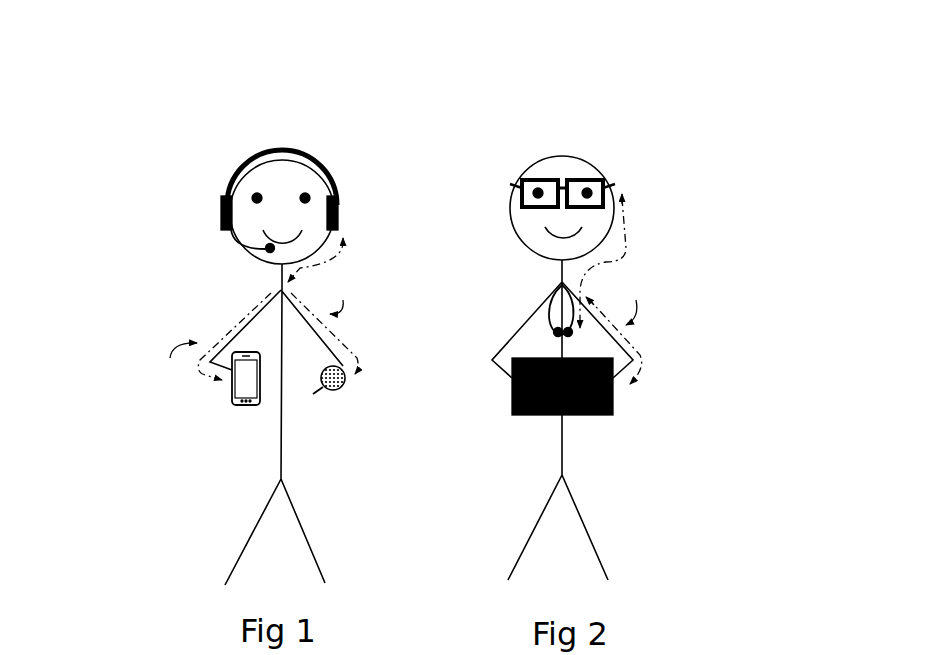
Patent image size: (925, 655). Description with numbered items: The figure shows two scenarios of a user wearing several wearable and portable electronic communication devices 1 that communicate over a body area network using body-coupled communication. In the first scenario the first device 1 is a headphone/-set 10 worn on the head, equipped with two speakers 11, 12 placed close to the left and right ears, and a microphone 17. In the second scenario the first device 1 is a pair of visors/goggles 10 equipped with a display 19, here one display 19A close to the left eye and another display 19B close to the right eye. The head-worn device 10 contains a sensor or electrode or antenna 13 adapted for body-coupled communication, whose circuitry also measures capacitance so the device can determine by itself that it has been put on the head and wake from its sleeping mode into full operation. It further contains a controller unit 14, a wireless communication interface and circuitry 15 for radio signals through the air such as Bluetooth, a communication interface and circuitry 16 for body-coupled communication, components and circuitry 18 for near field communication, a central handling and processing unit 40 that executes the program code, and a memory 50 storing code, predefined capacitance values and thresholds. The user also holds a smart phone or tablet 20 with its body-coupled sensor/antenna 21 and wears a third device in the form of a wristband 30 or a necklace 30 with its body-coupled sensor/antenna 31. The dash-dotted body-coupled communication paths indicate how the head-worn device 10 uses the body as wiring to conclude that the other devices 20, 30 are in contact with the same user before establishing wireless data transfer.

In FIG. 1, the wearable and portable electronic communication device 1 is at (222, 160).
In FIG. 2, the wearable and portable electronic communication device 1 is at (622, 305).
In FIG. 1, the headphone/-set or visors/goggles 10 is at (229, 183).
In FIG. 2, the headphone/-set or visors/goggles 10 is at (650, 119).
In FIG. 1, the speaker 11 is at (220, 214).
In FIG. 1, the speaker 12 is at (346, 214).
In FIG. 1, the sensor/electrode/antenna 13 is at (229, 183).
In FIG. 2, the sensor/electrode/antenna 13 is at (650, 119).
In FIG. 1, the controller unit 14 is at (229, 183).
In FIG. 2, the controller unit 14 is at (650, 119).
In FIG. 1, the wireless communication interface and circuitry 15 is at (229, 183).
In FIG. 2, the wireless communication interface and circuitry 15 is at (650, 119).
In FIG. 1, the communication interface and circuitry for BCC 16 is at (229, 183).
In FIG. 2, the communication interface and circuitry for BCC 16 is at (650, 119).
In FIG. 1, the microphone 17 is at (262, 258).
In FIG. 1, the components and circuitry for Near Field Communication 18 is at (229, 183).
In FIG. 2, the components and circuitry for Near Field Communication 18 is at (650, 119).
In FIG. 2, the display 19 is at (650, 119).
In FIG. 2, the display 19A is at (523, 178).
In FIG. 2, the display 19B is at (605, 180).
In FIG. 1, the smart phone or tablet 20 is at (162, 425).
In FIG. 2, the smart phone or tablet 20 is at (634, 424).
In FIG. 1, the sensor/antenna 21 is at (240, 422).
In FIG. 2, the sensor/antenna 21 is at (590, 420).
In FIG. 1, the bracelet/wristband or necklace 30 is at (396, 440).
In FIG. 2, the bracelet/wristband or necklace 30 is at (489, 301).
In FIG. 1, the sensor/antenna 31 is at (338, 408).
In FIG. 2, the sensor/antenna 31 is at (548, 293).
In FIG. 1, the central handling and processing unit 40 is at (229, 183).
In FIG. 2, the central handling and processing unit 40 is at (650, 119).
In FIG. 1, the memory 50 is at (229, 183).
In FIG. 2, the memory 50 is at (650, 119).